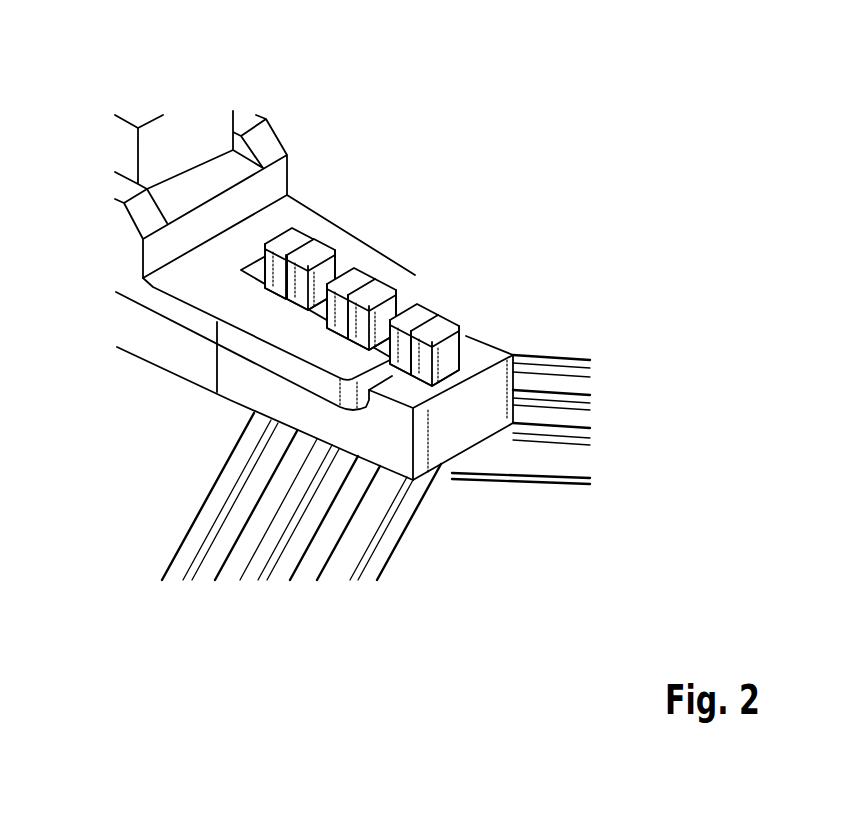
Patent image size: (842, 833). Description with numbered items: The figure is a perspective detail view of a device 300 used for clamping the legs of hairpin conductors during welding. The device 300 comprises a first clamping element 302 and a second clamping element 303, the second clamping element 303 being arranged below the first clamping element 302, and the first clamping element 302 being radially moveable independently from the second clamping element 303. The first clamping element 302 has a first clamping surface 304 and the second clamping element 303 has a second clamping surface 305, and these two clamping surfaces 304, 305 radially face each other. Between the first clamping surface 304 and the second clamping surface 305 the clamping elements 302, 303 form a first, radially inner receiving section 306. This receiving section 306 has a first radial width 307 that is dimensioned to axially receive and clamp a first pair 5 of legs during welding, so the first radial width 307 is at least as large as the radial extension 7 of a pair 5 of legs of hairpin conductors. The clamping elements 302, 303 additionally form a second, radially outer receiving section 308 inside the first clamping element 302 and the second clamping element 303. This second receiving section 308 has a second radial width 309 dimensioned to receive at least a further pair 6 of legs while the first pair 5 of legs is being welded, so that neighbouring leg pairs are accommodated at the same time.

The device 300 is at (119, 84).
The first clamping element 302 is at (183, 282).
The second clamping element 303 is at (233, 404).
The first clamping surface 304 is at (365, 551).
The second clamping surface 305 is at (467, 360).
The first receiving section 306 is at (418, 367).
The first radial width 307 is at (462, 290).
The second receiving section 308 is at (318, 322).
The second radial width 309 is at (325, 192).
The first pair of legs 5 is at (438, 298).
The further pair of legs 6 is at (322, 300).
The radial extension 7 is at (428, 332).